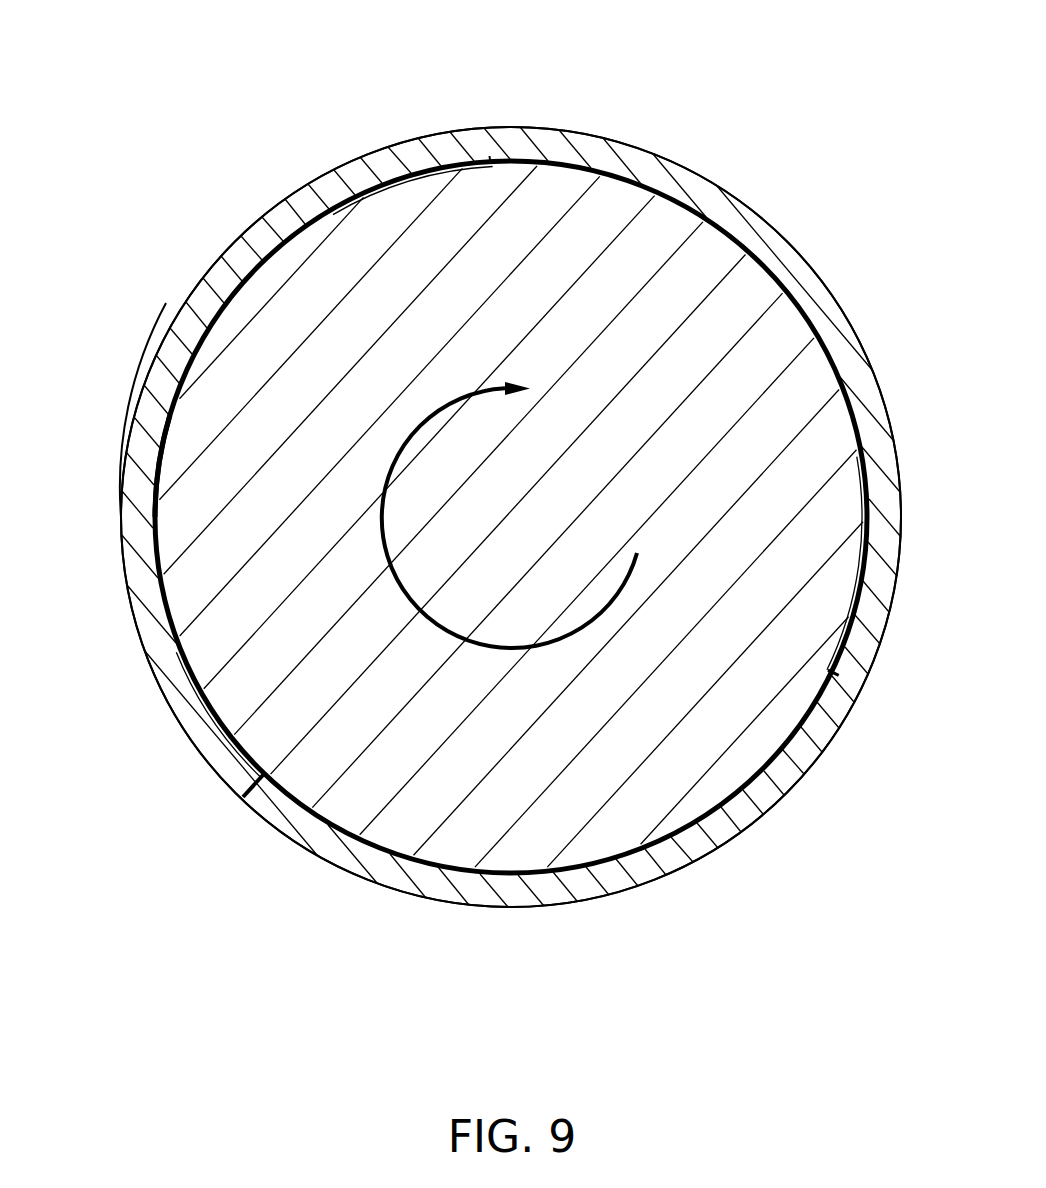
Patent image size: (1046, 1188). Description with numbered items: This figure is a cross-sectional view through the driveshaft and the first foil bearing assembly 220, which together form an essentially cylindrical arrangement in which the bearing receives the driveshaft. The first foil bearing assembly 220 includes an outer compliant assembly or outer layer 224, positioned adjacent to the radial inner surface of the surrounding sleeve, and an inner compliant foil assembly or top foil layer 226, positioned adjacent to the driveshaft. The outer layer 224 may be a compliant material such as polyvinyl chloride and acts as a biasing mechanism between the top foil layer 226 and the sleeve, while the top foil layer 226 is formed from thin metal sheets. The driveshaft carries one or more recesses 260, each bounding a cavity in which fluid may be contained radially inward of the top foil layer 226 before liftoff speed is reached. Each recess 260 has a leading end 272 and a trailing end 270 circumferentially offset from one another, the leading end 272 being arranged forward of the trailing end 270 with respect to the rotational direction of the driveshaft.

The first foil bearing assembly 220 is at (70, 260).
The outer layer 224 is at (158, 390).
The top foil layer 226 is at (155, 478).
The recess 260 is at (413, 158).
The trailing end 270 is at (168, 350).
The leading end 272 is at (488, 158).